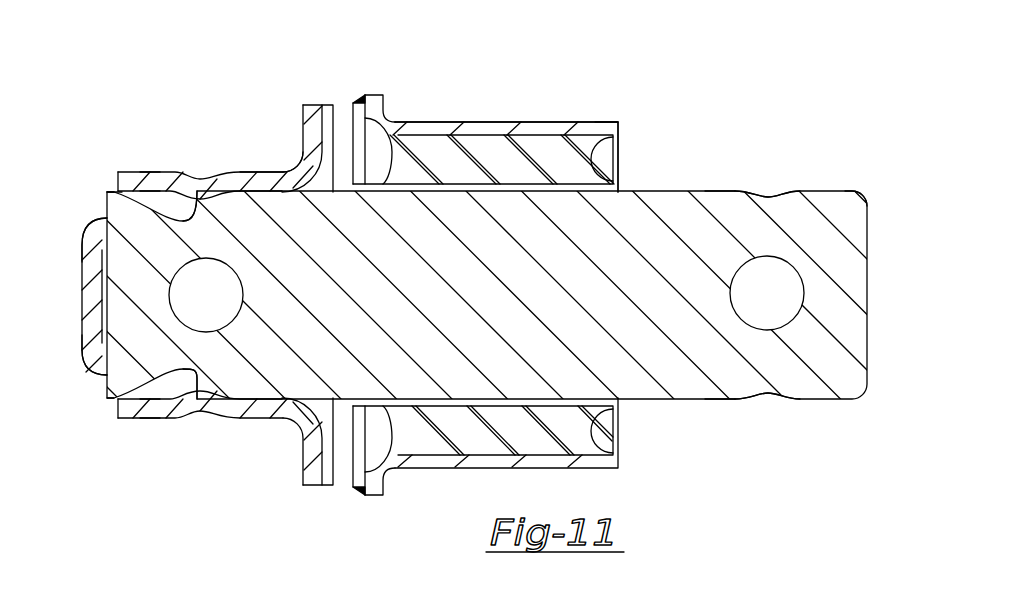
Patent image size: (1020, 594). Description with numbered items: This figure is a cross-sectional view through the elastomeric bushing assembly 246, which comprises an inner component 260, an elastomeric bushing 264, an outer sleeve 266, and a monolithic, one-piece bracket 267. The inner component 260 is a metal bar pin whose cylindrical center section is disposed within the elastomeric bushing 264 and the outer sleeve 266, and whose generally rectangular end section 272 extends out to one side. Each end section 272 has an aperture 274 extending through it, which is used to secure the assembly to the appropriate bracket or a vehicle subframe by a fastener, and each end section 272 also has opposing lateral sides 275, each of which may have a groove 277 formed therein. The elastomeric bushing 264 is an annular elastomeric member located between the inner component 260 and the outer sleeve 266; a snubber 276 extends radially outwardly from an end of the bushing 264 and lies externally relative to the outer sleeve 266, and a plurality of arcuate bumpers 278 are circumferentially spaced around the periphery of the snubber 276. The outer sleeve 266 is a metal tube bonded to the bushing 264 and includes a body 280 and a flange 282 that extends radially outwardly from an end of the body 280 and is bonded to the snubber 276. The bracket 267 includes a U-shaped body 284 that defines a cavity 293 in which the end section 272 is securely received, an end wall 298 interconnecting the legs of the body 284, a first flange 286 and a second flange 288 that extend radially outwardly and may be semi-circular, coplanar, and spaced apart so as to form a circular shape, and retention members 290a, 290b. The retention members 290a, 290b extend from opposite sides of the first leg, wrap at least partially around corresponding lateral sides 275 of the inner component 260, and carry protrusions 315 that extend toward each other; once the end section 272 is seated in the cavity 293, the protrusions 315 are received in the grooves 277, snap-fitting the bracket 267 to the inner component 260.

The elastomeric bushing assembly 246 is at (530, 84).
The inner component 260 is at (648, 189).
The elastomeric bushing 264 is at (612, 438).
The outer sleeve 266 is at (600, 121).
The bracket 267 is at (257, 172).
The rectangular end section 272 is at (116, 190).
The aperture 274 is at (197, 298).
The lateral side 275 is at (150, 172).
The snubber 276 is at (368, 497).
The groove 277 is at (213, 195).
The bumper 278 is at (358, 107).
The body 280 is at (500, 121).
The flange 282 is at (374, 95).
The body 284 is at (82, 294).
The first flange 286 is at (311, 104).
The second flange 288 is at (307, 486).
The retention member 290a is at (138, 175).
The retention member 290b is at (138, 413).
The cavity 293 is at (98, 263).
The end wall 298 is at (90, 343).
The protrusion 315 is at (113, 191).